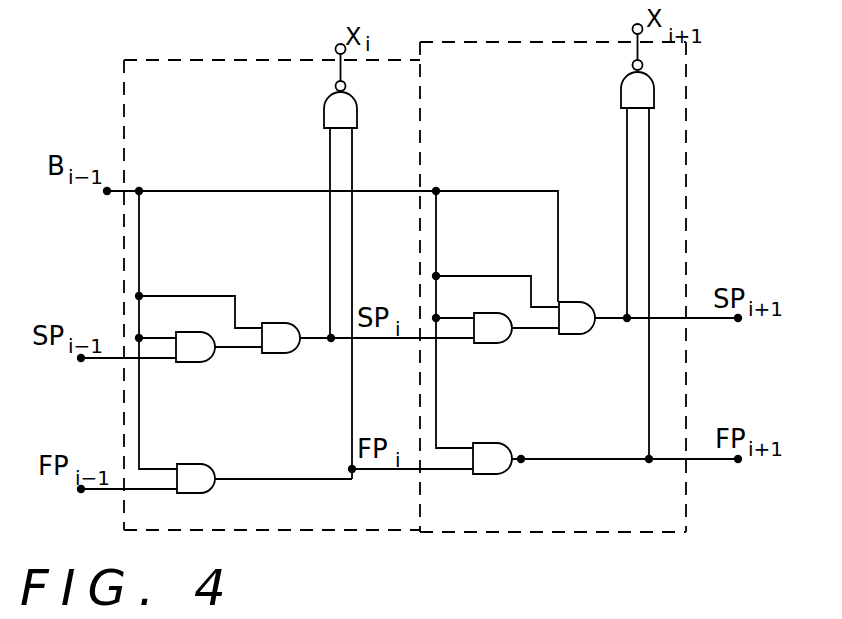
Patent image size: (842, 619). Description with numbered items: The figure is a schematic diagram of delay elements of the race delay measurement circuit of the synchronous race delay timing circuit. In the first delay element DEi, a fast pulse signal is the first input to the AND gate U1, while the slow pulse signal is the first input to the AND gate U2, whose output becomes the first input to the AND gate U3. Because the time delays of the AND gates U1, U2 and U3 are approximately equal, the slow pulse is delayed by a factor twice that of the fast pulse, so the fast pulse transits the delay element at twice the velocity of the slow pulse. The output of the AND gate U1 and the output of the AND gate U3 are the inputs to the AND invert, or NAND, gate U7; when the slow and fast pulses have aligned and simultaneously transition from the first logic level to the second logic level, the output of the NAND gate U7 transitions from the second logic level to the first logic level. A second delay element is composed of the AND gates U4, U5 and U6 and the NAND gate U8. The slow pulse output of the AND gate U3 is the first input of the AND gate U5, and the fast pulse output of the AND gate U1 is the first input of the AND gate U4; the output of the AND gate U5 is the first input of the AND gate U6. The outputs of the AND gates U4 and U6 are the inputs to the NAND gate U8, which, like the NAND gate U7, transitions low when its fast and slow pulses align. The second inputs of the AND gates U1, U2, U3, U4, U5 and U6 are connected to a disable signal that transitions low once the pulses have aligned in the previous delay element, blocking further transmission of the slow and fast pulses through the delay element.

The AND gate U1 is at (196, 495).
The AND gate U2 is at (196, 364).
The AND gate U3 is at (281, 354).
The AND gate U4 is at (493, 476).
The AND gate U5 is at (494, 345).
The AND gate U6 is at (576, 335).
The NAND gate U7 is at (362, 261).
The NAND gate U8 is at (616, 241).
The delay element DEi is at (272, 287).